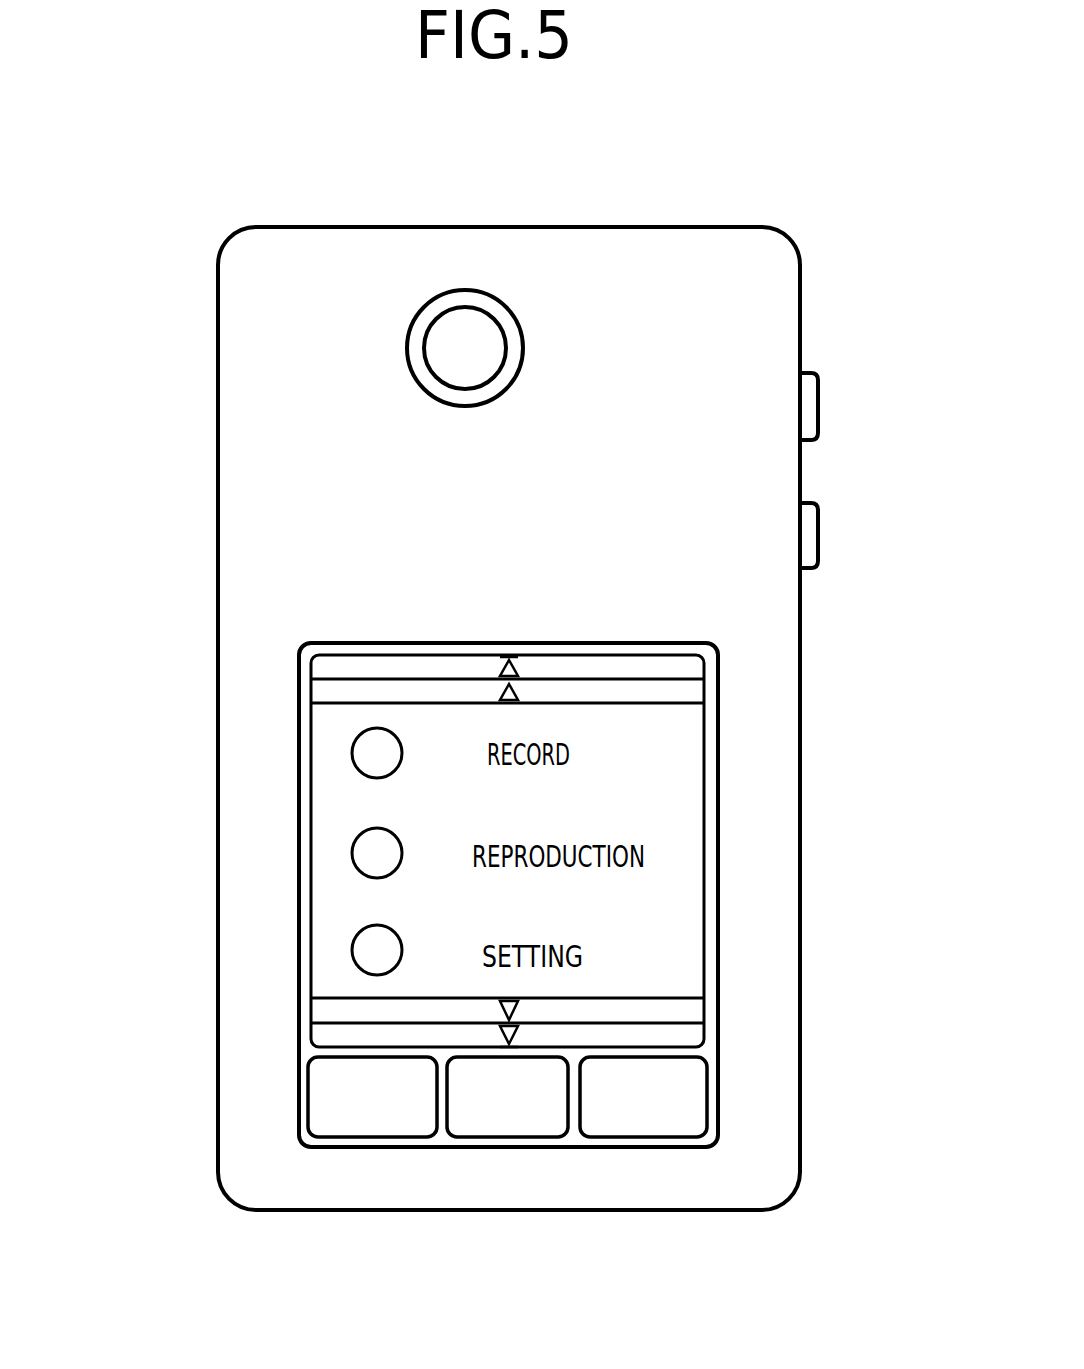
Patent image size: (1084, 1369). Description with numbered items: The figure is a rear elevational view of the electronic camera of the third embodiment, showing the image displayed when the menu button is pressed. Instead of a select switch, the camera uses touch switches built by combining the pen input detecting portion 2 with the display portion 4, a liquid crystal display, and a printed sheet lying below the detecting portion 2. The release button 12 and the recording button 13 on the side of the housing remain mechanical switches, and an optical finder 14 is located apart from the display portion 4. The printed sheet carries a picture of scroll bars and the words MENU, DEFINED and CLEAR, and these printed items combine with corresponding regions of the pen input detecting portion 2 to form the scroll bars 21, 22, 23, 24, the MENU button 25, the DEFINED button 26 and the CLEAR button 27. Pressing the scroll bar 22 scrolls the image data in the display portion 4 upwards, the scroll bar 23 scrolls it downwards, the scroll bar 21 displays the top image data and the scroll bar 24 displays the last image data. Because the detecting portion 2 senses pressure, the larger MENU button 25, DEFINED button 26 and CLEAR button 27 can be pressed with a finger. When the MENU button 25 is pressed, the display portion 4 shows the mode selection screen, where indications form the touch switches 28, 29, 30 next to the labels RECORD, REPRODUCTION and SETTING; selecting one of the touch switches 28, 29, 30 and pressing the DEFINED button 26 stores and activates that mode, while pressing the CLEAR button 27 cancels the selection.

The pen input detecting portion 2 is at (290, 1147).
The display portion 4 is at (283, 712).
The release button 12 is at (812, 405).
The recording button 13 is at (812, 533).
The optical finder 14 is at (468, 303).
The scroll bar 21 is at (707, 663).
The scroll bar 22 is at (692, 698).
The scroll bar 23 is at (707, 1003).
The scroll bar 24 is at (693, 1040).
The MENU button 25 is at (550, 1123).
The DEFINED button 26 is at (690, 1120).
The CLEAR button 27 is at (383, 1123).
The touch switch 28 is at (353, 758).
The touch switch 29 is at (352, 853).
The touch switch 30 is at (353, 957).